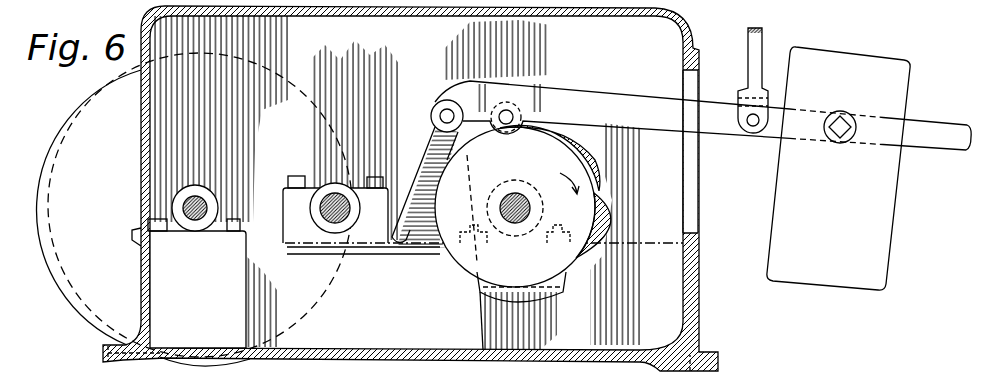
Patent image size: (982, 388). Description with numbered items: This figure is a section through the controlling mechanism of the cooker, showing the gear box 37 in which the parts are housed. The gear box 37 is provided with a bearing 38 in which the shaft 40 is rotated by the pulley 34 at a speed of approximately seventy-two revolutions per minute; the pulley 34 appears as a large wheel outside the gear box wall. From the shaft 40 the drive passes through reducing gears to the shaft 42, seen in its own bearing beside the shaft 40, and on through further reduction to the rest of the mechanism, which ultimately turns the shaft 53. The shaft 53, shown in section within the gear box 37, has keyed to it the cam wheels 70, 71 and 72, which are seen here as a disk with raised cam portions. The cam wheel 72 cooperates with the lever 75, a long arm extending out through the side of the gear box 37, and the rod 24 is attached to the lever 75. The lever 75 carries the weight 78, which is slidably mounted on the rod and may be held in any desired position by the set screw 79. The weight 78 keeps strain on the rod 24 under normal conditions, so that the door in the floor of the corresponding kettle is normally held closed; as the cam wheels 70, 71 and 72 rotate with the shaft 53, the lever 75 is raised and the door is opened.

The rod 24 is at (748, 62).
The pulley 34 is at (65, 270).
The gear box 37 is at (690, 316).
The bearing 38 is at (193, 232).
The shaft 40 is at (200, 219).
The shaft 42 is at (347, 221).
The shaft 53 is at (515, 193).
The cam wheel 70 is at (573, 141).
The cam wheel 71 is at (613, 226).
The cam wheel 72 is at (521, 304).
The lever 75 is at (681, 161).
The weight 78 is at (838, 168).
The set screw 79 is at (845, 123).